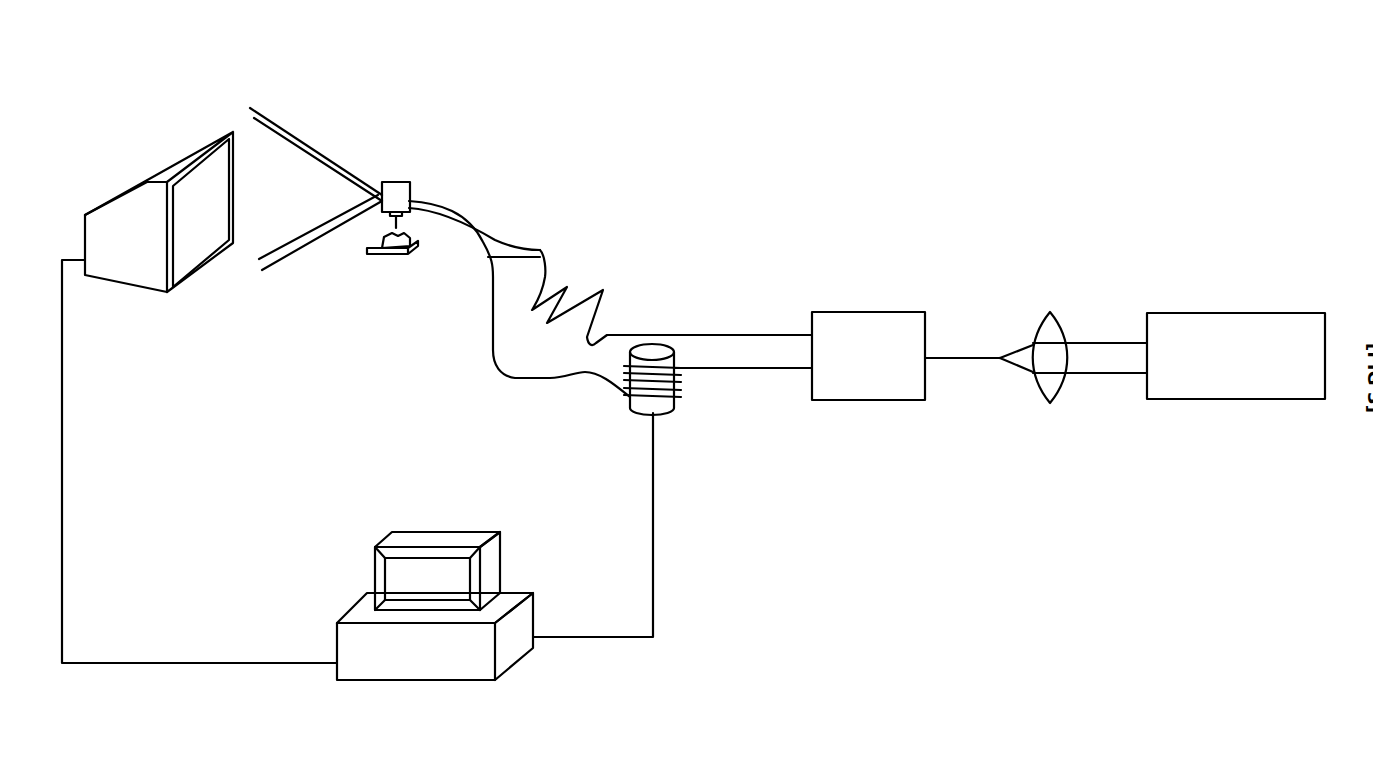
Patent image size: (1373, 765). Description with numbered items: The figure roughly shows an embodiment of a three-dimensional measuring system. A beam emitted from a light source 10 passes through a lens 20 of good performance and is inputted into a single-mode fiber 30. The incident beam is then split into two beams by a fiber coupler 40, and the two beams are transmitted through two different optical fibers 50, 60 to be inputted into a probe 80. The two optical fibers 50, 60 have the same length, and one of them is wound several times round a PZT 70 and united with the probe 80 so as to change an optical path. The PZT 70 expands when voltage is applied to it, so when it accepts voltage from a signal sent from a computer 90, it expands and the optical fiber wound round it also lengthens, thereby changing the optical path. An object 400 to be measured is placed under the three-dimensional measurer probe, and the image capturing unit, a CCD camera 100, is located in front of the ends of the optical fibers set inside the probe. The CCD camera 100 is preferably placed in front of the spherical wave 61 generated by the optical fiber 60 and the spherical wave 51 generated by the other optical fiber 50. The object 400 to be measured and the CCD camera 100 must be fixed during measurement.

The light source 10 is at (1188, 333).
The lens 20 is at (1052, 313).
The single-mode fiber 30 is at (952, 360).
The fiber coupler 40 is at (840, 333).
The optical fiber 50 is at (540, 250).
The spherical wave 51 is at (320, 257).
The optical fiber 60 is at (475, 215).
The spherical wave 61 is at (290, 128).
The PZT 70 is at (665, 410).
The probe 80 is at (409, 190).
The computer 90 is at (460, 653).
The CCD camera 100 is at (185, 227).
The object 400 is at (398, 250).